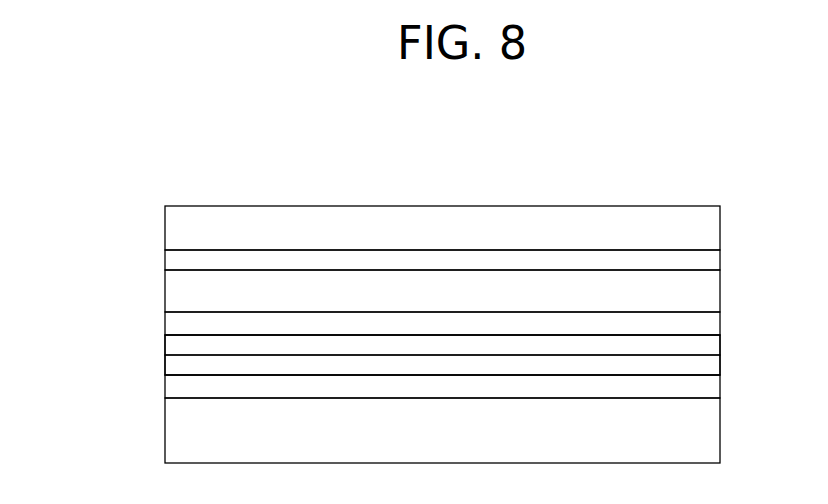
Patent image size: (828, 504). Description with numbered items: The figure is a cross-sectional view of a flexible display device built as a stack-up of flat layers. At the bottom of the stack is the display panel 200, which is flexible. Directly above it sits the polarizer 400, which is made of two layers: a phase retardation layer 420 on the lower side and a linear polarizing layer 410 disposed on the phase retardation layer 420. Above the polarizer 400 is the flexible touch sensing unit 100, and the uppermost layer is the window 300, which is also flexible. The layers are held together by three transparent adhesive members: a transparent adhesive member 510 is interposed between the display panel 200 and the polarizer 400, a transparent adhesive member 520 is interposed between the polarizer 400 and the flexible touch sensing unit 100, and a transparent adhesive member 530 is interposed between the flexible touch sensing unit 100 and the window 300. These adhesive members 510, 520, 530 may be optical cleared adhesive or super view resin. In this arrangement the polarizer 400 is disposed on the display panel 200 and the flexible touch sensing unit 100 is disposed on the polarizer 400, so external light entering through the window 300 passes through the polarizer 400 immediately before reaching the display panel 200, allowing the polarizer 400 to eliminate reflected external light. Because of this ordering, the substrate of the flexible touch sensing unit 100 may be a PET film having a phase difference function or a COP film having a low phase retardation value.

The window 300 is at (175, 231).
The transparent adhesive member 530 is at (710, 259).
The flexible touch sensing unit 100 is at (177, 292).
The transparent adhesive member 520 is at (710, 323).
The polarizer 400 is at (80, 337).
The linear polarizing layer 410 is at (177, 345).
The phase retardation layer 420 is at (177, 367).
The transparent adhesive member 510 is at (710, 387).
The display panel 200 is at (177, 430).